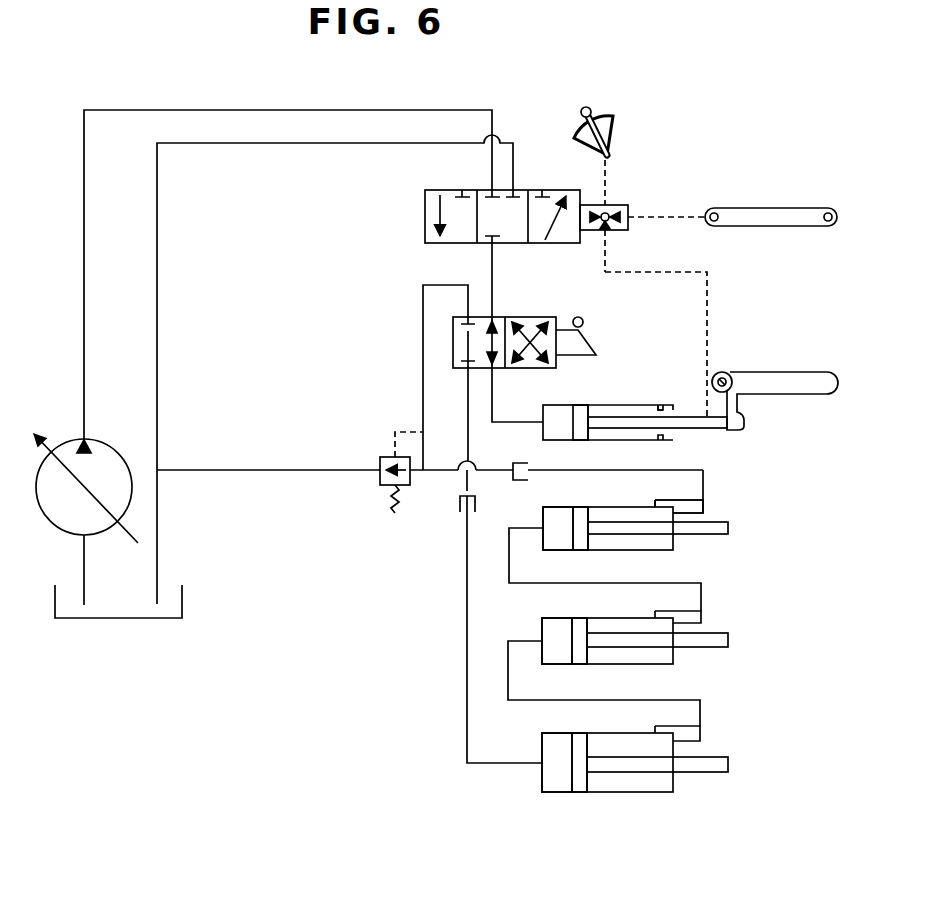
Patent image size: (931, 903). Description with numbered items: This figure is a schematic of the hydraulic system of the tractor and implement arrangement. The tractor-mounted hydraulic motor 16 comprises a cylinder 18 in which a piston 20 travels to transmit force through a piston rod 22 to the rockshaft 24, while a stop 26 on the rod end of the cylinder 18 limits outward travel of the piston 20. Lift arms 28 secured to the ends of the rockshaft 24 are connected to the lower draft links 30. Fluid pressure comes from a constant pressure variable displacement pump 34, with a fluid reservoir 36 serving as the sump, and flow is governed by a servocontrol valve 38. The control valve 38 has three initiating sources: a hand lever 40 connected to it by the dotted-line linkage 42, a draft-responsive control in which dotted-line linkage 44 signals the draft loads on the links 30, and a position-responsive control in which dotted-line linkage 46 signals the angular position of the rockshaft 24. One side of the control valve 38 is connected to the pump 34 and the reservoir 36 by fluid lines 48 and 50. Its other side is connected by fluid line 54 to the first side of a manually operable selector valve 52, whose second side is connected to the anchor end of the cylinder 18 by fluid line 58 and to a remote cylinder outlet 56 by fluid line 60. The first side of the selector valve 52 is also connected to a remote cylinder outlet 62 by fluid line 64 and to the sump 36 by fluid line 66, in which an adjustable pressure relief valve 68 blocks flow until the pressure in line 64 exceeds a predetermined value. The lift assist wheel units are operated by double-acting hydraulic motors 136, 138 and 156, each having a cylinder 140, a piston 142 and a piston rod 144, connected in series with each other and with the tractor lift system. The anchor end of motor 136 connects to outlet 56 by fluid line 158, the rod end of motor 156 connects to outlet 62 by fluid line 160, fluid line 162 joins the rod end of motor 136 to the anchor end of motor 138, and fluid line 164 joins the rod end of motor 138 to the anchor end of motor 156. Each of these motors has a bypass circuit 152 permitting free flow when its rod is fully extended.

The hydraulic motor 16 is at (635, 408).
The cylinder 18 is at (568, 405).
The piston 20 is at (581, 405).
The piston rod 22 is at (697, 430).
The rockshaft 24 is at (727, 372).
The stop 26 is at (661, 406).
The lift arms 28 is at (775, 382).
The lower draft links 30 is at (758, 212).
The constant pressure variable displacement pump 34 is at (105, 447).
The fluid reservoir 36 is at (185, 600).
The servocontrol valve 38 is at (417, 186).
The hand lever 40 is at (588, 110).
The linkage 42 is at (607, 178).
The linkage 44 is at (670, 216).
The linkage 46 is at (667, 270).
The fluid line 48 is at (278, 110).
The fluid line 50 is at (320, 143).
The selector valve 52 is at (566, 325).
The fluid line 54 is at (493, 258).
The remote cylinder outlet 56 is at (460, 506).
The fluid line 58 is at (493, 394).
The fluid line 60 is at (468, 426).
The remote cylinder outlet 62 is at (523, 463).
The fluid line 64 is at (423, 352).
The fluid line 66 is at (260, 468).
The pressure relief valve 68 is at (378, 463).
The hydraulic motor 136 is at (608, 728).
The hydraulic motor 138 is at (605, 610).
The cylinder 140 is at (556, 550).
The piston 142 is at (579, 550).
The piston rod 144 is at (718, 534).
The bypass circuit 152 is at (666, 500).
The hydraulic motor 156 is at (598, 505).
The fluid line 158 is at (466, 604).
The fluid line 160 is at (635, 468).
The fluid line 162 is at (648, 700).
The fluid line 164 is at (656, 583).